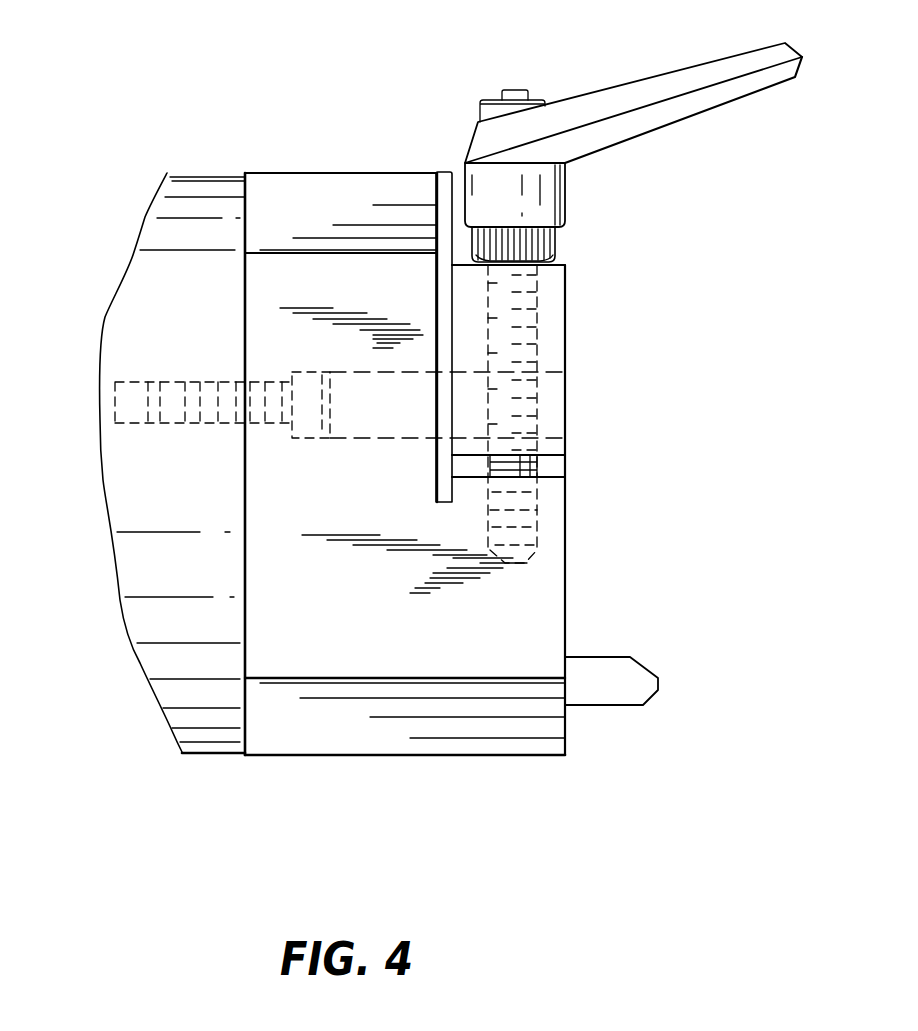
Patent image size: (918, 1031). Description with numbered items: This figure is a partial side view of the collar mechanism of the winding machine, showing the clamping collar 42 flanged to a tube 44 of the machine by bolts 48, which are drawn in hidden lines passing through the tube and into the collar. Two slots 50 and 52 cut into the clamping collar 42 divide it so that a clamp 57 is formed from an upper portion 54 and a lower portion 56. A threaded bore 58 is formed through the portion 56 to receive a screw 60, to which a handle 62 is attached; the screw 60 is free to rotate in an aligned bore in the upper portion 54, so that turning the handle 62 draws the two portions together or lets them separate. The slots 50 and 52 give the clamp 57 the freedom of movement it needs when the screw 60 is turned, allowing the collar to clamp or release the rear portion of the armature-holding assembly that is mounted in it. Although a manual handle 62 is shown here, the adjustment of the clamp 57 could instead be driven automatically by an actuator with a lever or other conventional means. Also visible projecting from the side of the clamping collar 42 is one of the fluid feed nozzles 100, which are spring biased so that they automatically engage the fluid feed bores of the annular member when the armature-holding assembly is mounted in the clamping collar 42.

The clamping collar 42 is at (252, 143).
The tube 44 is at (162, 218).
The bolts 48 is at (170, 392).
The slot 50 is at (440, 217).
The slot 52 is at (553, 462).
The upper portion 54 is at (553, 347).
The portion 56 is at (322, 660).
The clamp 57 is at (568, 283).
The threaded bore 58 is at (552, 537).
The screw 60 is at (528, 418).
The handle 62 is at (698, 75).
The fluid feed nozzle 100 is at (645, 652).